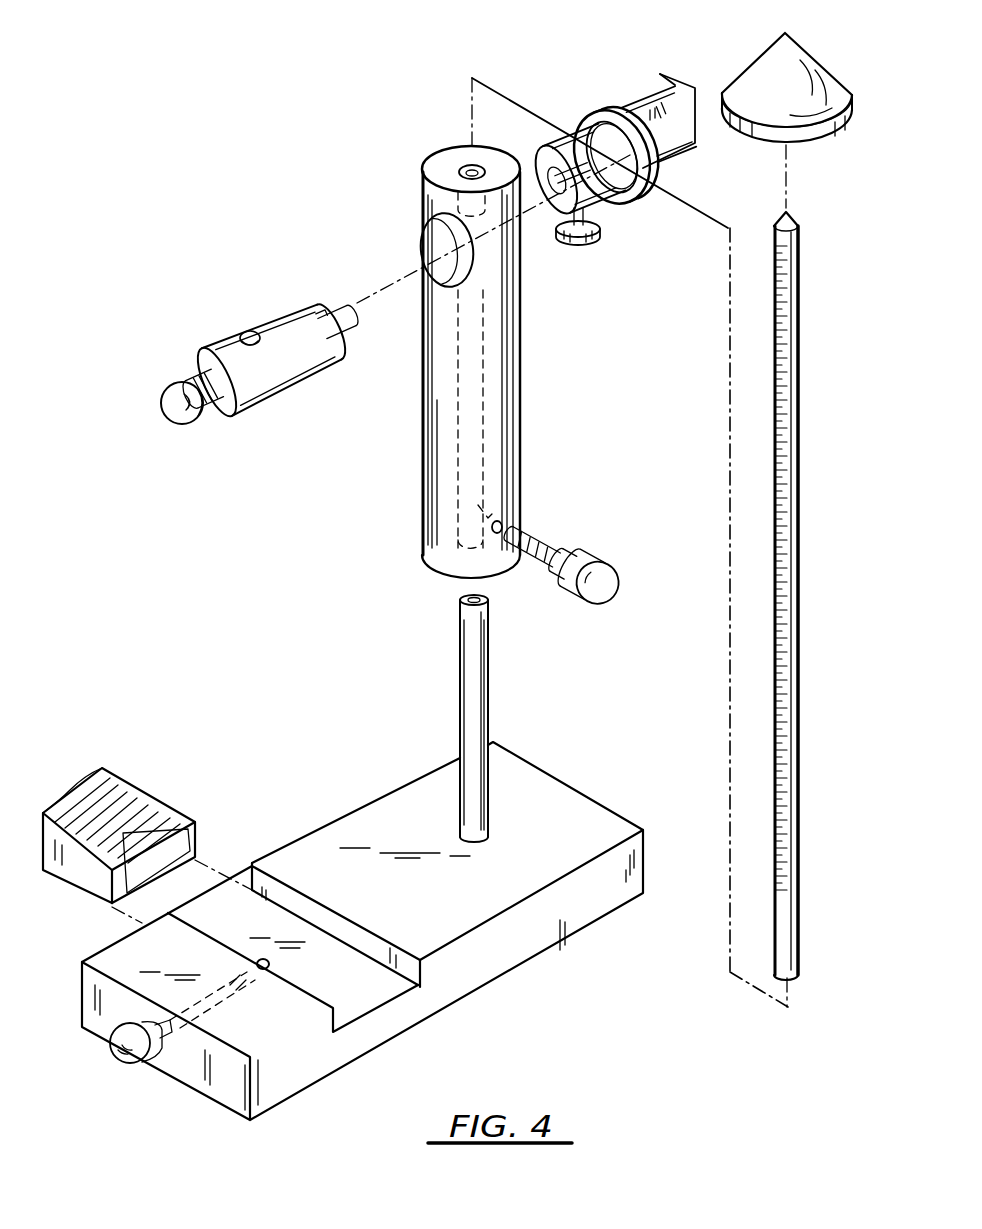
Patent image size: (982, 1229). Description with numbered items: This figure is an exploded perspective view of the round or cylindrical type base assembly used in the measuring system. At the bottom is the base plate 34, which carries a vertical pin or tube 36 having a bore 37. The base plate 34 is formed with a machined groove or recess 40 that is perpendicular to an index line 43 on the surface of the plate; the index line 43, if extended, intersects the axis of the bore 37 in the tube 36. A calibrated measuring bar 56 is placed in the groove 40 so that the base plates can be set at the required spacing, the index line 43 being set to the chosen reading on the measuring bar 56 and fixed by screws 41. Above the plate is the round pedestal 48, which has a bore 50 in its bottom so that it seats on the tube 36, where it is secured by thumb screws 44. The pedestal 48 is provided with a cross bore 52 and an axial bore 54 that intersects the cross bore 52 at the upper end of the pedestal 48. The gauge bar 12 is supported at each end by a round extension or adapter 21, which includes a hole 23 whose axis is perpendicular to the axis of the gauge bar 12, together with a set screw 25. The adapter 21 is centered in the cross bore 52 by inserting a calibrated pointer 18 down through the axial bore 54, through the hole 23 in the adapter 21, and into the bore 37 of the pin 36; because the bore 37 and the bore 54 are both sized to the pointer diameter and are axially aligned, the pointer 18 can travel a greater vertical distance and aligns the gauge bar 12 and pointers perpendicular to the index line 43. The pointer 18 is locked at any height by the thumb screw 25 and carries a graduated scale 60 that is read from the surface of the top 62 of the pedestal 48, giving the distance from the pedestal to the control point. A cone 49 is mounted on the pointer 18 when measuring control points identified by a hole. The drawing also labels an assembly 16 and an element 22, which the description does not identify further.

The gauge bar 12 is at (637, 138).
The knob clamp assembly 16 is at (235, 318).
The calibrated pointer 18 is at (768, 596).
The round extension or adapter 21 is at (300, 372).
The thumb screw 22 is at (688, 143).
The hole 23 is at (254, 331).
The set screw 25 is at (170, 415).
The base plate 34 is at (362, 931).
The vertical pin or tube 36 is at (434, 706).
The bore 37 is at (470, 594).
The groove or recess 40 is at (265, 885).
The screws 41 is at (112, 1052).
The index line 43 is at (345, 908).
The thumb screws 44 is at (620, 584).
The pedestal 48 is at (476, 334).
The cone 49 is at (805, 62).
The bore 50 is at (478, 405).
The cross bore 52 is at (445, 228).
The axial bore 54 is at (468, 166).
The calibrated measuring bar 56 is at (197, 820).
The graduated scale 60 is at (774, 364).
The top 62 is at (437, 162).